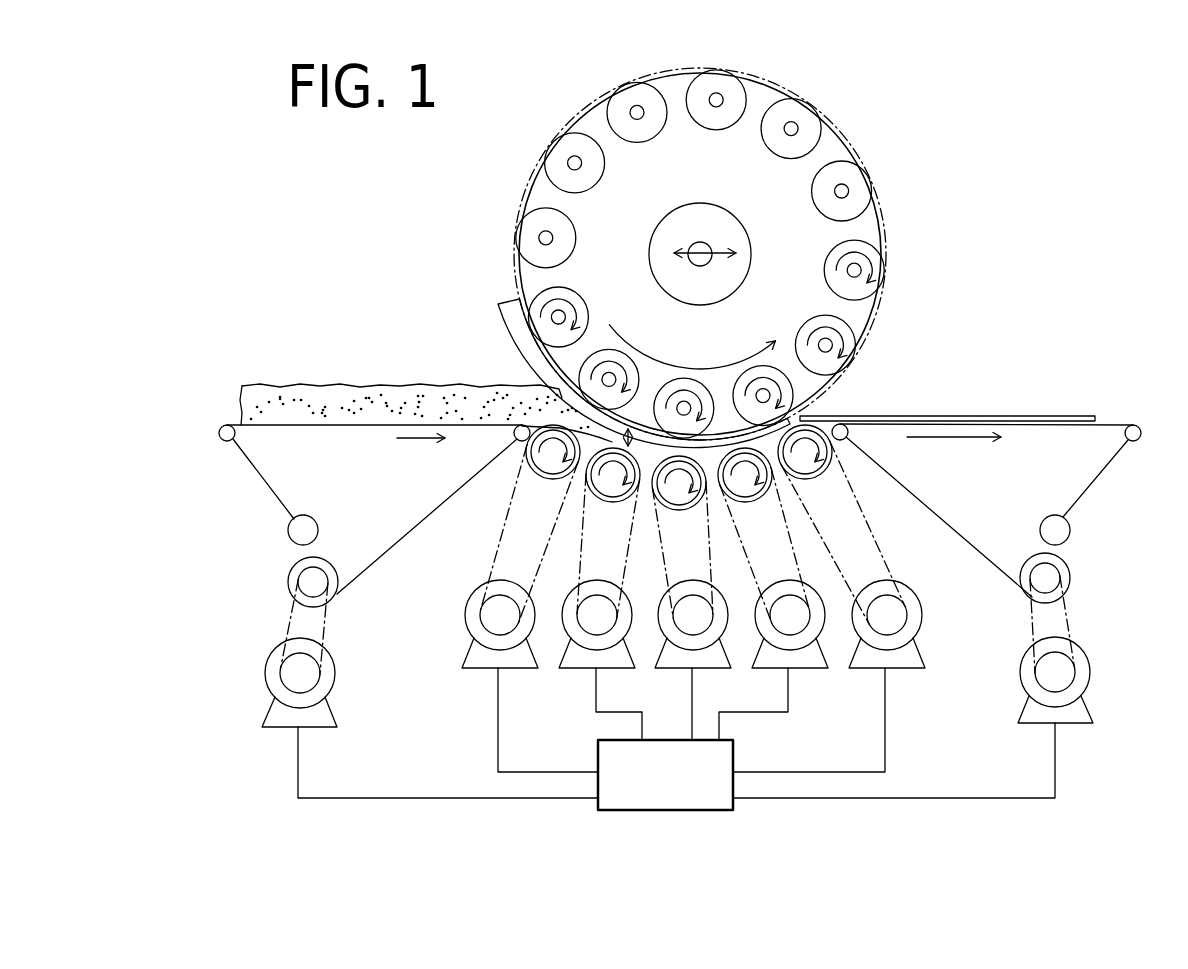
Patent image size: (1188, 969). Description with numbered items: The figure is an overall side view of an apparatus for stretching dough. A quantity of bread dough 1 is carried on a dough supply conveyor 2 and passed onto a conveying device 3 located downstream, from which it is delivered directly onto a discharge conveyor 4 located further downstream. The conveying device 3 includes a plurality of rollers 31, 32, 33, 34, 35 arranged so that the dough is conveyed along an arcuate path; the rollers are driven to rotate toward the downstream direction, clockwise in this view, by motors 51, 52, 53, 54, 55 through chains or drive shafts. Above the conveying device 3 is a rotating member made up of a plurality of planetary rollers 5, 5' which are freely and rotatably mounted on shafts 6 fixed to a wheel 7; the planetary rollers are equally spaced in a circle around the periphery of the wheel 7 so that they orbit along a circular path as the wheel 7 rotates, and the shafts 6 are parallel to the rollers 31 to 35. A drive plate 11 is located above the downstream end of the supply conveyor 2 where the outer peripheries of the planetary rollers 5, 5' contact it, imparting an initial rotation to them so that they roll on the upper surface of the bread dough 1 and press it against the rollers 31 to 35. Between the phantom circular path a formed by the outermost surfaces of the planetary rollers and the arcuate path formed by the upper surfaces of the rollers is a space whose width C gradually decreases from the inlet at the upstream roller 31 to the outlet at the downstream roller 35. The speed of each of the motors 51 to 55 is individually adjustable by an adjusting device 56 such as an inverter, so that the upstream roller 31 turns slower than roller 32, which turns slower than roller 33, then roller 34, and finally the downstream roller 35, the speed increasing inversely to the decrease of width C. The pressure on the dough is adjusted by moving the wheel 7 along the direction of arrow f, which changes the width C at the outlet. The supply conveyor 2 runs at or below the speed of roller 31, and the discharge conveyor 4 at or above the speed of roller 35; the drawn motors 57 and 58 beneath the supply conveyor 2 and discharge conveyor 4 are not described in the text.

The bread dough 1 is at (356, 386).
The dough supply conveyor 2 is at (243, 462).
The conveying device 3 is at (480, 558).
The discharge conveyor 4 is at (1097, 472).
The planetary roller 5 is at (738, 312).
The planetary roller 5' is at (726, 254).
The shaft 6 is at (861, 272).
The wheel 7 is at (832, 150).
The phantom circular path a is at (870, 327).
The drive plate 11 is at (503, 300).
The upstream roller 31 is at (543, 477).
The roller 32 is at (613, 505).
The roller 33 is at (682, 511).
The roller 34 is at (747, 507).
The downstream roller 35 is at (817, 483).
The motor 51 is at (467, 627).
The motor 52 is at (582, 670).
The motor 53 is at (678, 670).
The motor 54 is at (763, 670).
The motor 55 is at (860, 668).
The adjusting device 56 is at (728, 752).
The conveyor drive motor 57 is at (273, 703).
The conveyor drive motor 58 is at (1027, 703).